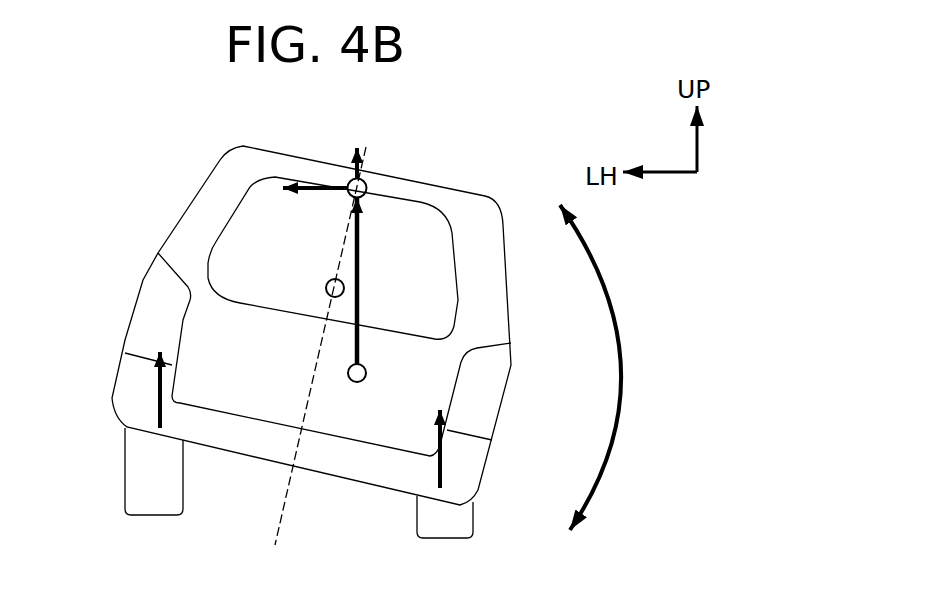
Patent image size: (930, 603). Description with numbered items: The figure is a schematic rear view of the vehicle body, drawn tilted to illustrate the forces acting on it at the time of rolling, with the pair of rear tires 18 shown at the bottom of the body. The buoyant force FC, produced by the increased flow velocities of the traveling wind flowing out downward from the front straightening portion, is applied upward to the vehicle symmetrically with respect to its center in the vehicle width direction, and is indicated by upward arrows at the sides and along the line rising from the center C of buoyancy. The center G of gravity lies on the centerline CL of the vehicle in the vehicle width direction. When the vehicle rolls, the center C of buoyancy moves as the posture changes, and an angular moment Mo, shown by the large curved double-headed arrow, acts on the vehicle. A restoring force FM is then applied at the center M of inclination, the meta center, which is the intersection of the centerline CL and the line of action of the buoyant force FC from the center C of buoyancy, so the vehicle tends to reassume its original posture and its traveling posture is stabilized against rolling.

The rear tire 18 is at (120, 480).
The center of inclination M is at (368, 192).
The center of gravity G is at (326, 288).
The center of buoyancy C is at (367, 371).
The restoring force FM is at (320, 187).
The buoyant force FC is at (361, 268).
The angular moment Mo is at (623, 367).
The centerline CL is at (293, 500).